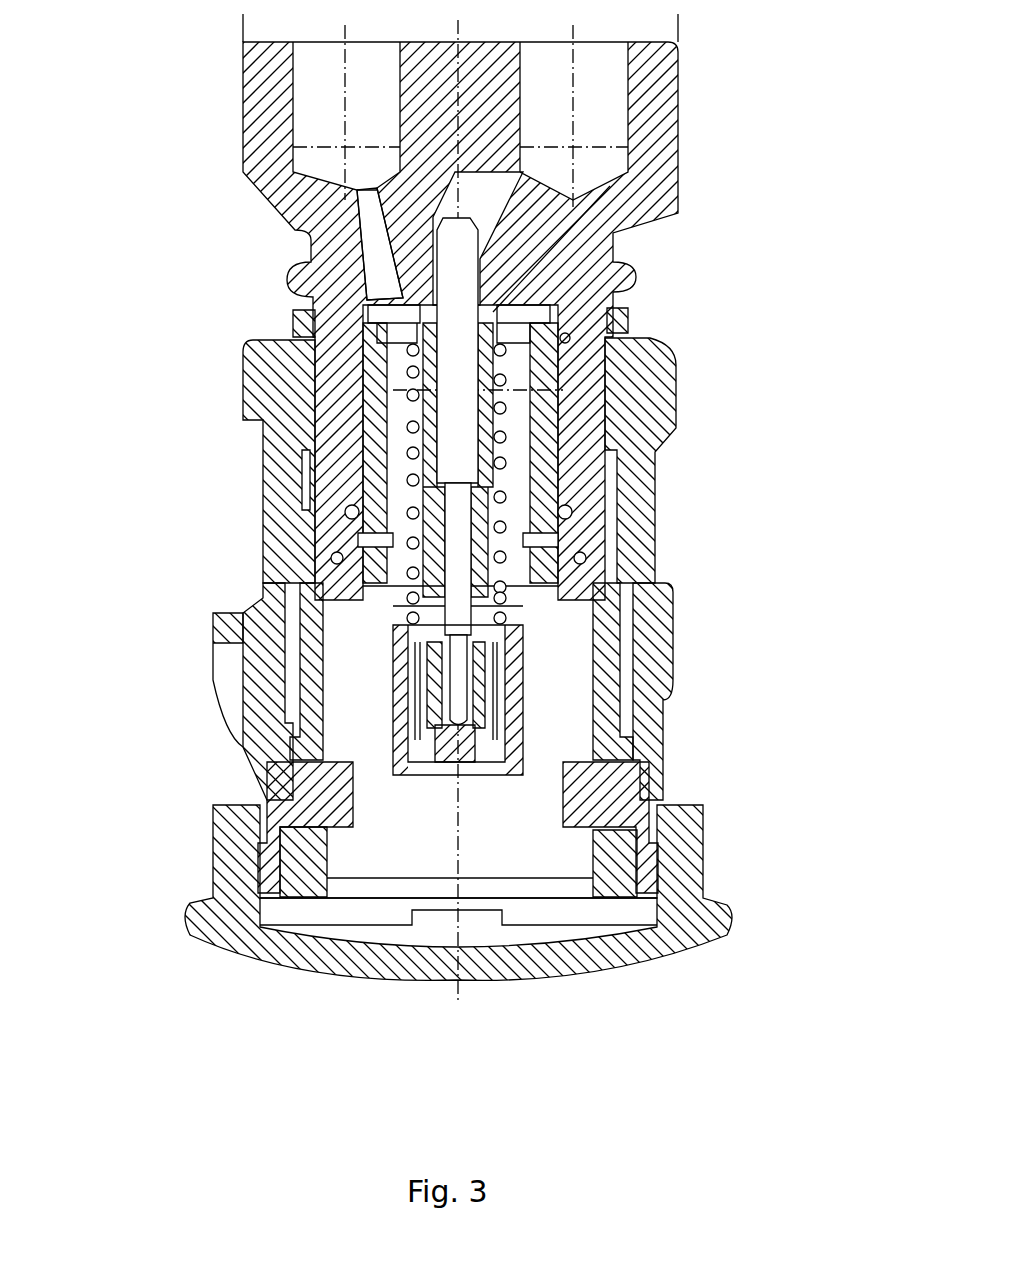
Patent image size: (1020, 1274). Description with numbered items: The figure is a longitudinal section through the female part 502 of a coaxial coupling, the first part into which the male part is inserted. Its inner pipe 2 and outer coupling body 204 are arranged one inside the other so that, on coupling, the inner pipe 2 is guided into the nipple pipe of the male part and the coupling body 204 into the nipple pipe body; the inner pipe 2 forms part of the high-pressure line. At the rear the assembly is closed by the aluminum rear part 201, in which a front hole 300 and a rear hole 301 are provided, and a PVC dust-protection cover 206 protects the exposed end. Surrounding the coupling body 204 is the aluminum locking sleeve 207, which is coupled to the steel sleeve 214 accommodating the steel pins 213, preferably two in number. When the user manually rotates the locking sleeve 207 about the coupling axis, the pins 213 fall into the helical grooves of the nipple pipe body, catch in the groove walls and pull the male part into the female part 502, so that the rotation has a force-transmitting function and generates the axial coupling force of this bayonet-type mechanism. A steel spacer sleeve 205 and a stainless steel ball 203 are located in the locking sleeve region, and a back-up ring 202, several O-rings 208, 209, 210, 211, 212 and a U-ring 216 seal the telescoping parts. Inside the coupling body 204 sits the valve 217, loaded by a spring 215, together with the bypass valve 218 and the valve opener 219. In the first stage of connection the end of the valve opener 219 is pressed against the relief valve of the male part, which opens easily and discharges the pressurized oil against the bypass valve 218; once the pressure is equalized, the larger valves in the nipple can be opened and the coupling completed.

The inner pipe 2 is at (450, 512).
The aluminum rear part 201 is at (617, 217).
The back-up ring 202 is at (436, 775).
The stainless steel ball 203 is at (583, 558).
The coupling body 204 is at (545, 540).
The steel spacer sleeve 205 is at (603, 800).
The PVC dust-protection cover 206 is at (690, 947).
The aluminum locking sleeve 207 is at (650, 378).
The O-ring 208 is at (397, 765).
The O-ring 209 is at (345, 815).
The O-ring 210 is at (568, 511).
The O-ring 211 is at (568, 336).
The O-ring 212 is at (450, 668).
The steel pin 213 is at (312, 897).
The steel sleeve 214 is at (500, 705).
The spring 215 is at (505, 528).
The U-ring 216 is at (605, 865).
The valve 217 is at (415, 640).
The bypass valve 218 is at (515, 765).
The valve opener 219 is at (380, 610).
The front hole 300 is at (282, 622).
The rear hole 301 is at (307, 510).
The female part 502 is at (130, 445).